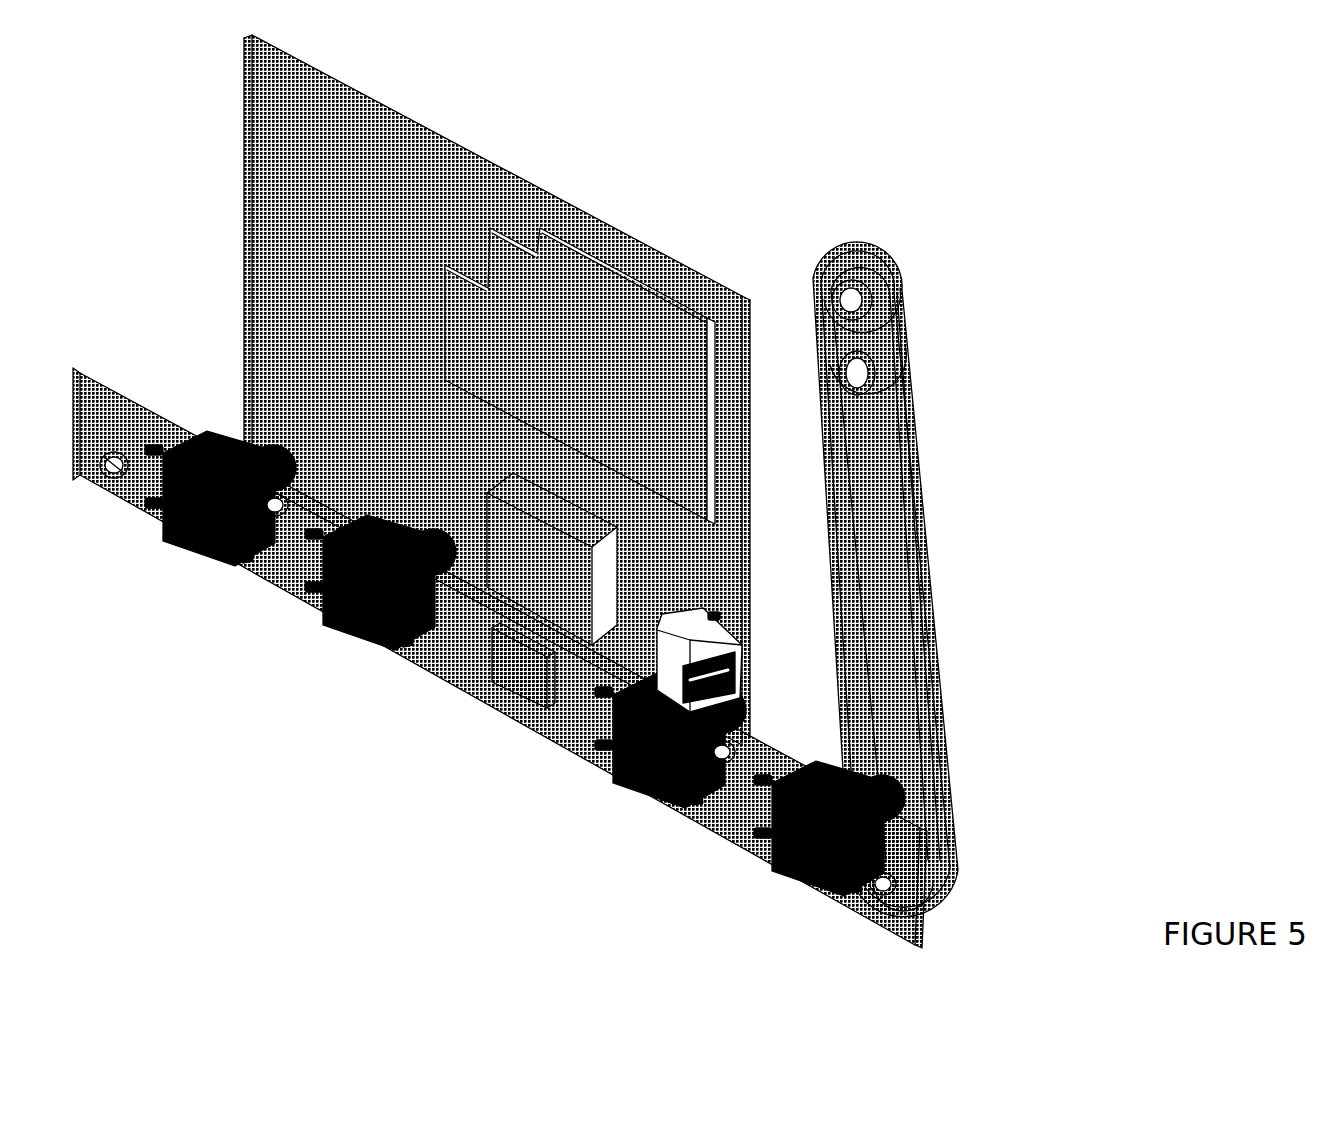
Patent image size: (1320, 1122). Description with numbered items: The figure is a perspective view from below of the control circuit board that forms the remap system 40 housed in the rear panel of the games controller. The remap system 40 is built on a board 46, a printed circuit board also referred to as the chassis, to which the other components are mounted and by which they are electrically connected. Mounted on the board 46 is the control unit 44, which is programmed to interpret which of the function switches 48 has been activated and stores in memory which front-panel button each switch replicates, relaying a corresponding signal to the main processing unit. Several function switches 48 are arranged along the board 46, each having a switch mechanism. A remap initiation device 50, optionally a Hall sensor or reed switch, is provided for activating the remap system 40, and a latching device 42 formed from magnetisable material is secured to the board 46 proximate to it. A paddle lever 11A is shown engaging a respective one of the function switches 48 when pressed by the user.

The remap system 40 is at (712, 273).
The latching device 42 is at (515, 508).
The control unit 44 is at (582, 290).
The board 46 is at (265, 183).
The function switches 48 is at (250, 528).
The remap initiation device 50 is at (528, 693).
The paddle lever 11A is at (895, 545).